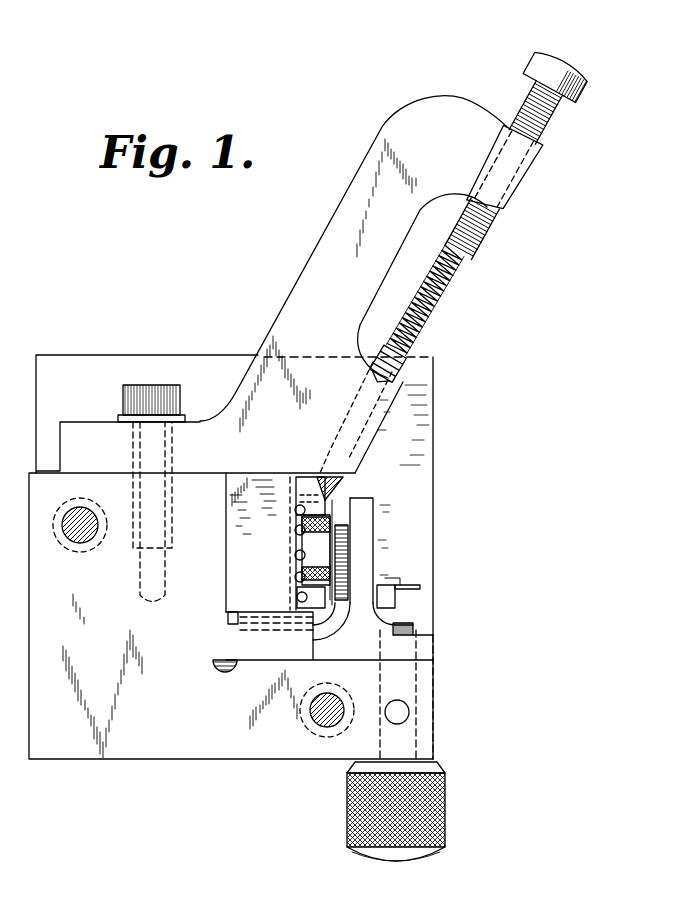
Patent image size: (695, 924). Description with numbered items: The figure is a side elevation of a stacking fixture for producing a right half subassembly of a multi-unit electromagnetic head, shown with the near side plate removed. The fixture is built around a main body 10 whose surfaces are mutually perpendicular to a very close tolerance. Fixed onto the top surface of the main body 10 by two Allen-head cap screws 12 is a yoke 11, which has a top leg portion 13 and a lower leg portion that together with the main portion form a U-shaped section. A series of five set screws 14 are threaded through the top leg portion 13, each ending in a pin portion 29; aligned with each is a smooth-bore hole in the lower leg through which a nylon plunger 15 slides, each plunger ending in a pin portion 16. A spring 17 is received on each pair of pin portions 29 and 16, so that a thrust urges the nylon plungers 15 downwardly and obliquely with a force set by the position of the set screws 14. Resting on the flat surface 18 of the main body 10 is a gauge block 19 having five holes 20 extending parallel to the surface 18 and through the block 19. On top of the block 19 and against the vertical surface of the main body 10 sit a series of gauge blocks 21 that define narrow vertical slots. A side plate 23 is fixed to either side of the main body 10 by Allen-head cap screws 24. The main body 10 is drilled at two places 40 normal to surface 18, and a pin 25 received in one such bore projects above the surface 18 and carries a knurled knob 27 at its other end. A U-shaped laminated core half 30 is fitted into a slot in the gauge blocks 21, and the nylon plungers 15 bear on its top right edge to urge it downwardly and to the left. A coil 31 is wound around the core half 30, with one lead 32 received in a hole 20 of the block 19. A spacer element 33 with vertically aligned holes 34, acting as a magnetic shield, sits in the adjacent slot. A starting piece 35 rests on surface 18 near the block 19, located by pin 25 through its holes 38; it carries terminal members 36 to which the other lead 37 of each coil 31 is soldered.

The main body 10 is at (82, 752).
The yoke 11 is at (302, 272).
The Allen-head cap screws 12 is at (123, 398).
The top leg portion 13 is at (525, 195).
The set screws 14 is at (562, 66).
The nylon plungers 15 is at (410, 378).
The pin portion 16 is at (420, 350).
The spring 17 is at (440, 312).
The flat surface 18 is at (433, 657).
The gauge block 19 is at (268, 668).
The holes 20 is at (228, 620).
The gauge blocks 21 is at (236, 544).
The side plate 23 is at (80, 362).
The Allen-head cap screws 24 is at (82, 540).
The pin 25 is at (413, 625).
The knurled knob 27 is at (445, 812).
The pin portion 29 is at (462, 262).
The laminated core half 30 is at (320, 478).
The coil 31 is at (345, 530).
The lead 32 is at (338, 618).
The spacer element 33 is at (352, 498).
The holes 34 is at (296, 532).
The starting piece 35 is at (378, 552).
The terminal members 36 is at (386, 585).
The lead 37 is at (342, 598).
The holes 38 is at (425, 640).
The bores 40 is at (416, 703).